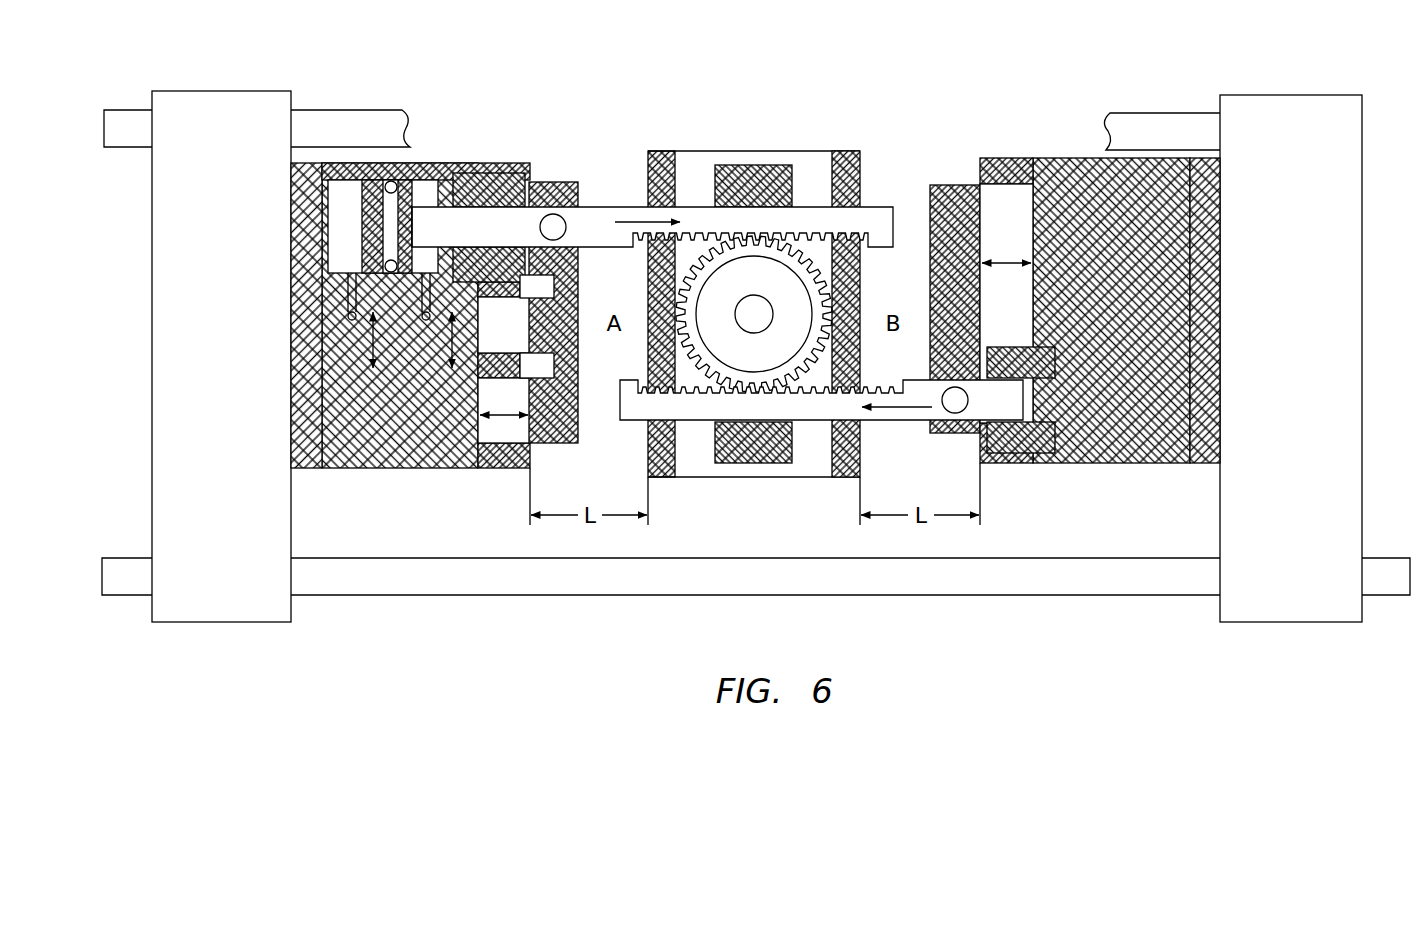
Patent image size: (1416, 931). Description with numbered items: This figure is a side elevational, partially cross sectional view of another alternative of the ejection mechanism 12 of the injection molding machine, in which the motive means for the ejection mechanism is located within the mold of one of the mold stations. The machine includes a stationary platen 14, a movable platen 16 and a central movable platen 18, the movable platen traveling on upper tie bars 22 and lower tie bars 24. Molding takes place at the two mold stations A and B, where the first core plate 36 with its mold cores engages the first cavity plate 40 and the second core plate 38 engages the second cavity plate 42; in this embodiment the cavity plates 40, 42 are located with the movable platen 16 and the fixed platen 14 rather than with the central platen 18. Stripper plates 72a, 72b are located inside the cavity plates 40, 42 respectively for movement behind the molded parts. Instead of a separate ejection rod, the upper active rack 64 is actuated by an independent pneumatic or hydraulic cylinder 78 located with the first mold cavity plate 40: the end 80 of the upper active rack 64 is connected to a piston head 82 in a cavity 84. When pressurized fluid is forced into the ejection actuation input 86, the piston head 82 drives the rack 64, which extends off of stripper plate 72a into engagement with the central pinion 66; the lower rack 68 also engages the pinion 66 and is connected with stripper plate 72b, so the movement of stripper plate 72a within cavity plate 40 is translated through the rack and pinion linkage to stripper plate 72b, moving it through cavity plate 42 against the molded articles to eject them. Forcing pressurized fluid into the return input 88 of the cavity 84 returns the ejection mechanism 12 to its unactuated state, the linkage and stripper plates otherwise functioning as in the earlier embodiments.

The ejection mechanism 12 is at (600, 428).
The stationary platen 14 is at (1268, 100).
The movable platen 16 is at (222, 105).
The central movable platen 18 is at (742, 177).
The upper tie bars 22 is at (133, 112).
The lower tie bars 24 is at (117, 590).
The first core plate 36 is at (650, 162).
The second core plate 38 is at (840, 158).
The first cavity plate 40 is at (503, 468).
The second cavity plate 42 is at (1000, 466).
The upper active rack 64 is at (697, 220).
The central pinion 66 is at (785, 250).
The lower rack 68 is at (864, 392).
The stripper plate 72a is at (555, 187).
The stripper plate 72b is at (948, 200).
The pneumatic or hydraulic cylinder 78 is at (422, 155).
The end of upper active rack 80 is at (427, 223).
The piston head 82 is at (373, 190).
The cavity 84 is at (345, 216).
The ejection actuation input 86 is at (350, 316).
The return input 88 is at (427, 323).